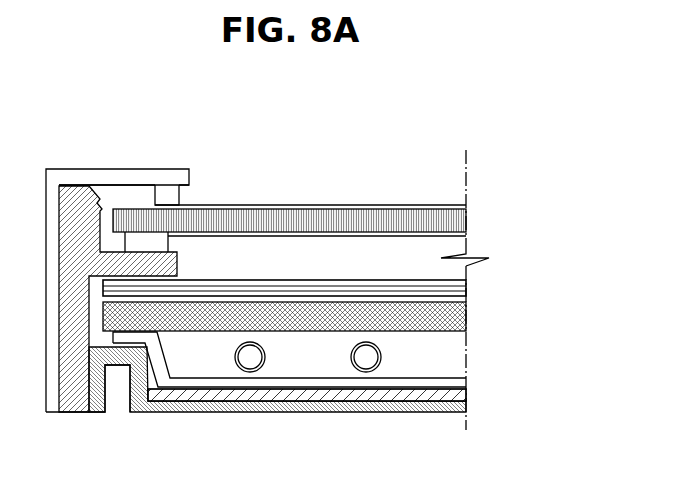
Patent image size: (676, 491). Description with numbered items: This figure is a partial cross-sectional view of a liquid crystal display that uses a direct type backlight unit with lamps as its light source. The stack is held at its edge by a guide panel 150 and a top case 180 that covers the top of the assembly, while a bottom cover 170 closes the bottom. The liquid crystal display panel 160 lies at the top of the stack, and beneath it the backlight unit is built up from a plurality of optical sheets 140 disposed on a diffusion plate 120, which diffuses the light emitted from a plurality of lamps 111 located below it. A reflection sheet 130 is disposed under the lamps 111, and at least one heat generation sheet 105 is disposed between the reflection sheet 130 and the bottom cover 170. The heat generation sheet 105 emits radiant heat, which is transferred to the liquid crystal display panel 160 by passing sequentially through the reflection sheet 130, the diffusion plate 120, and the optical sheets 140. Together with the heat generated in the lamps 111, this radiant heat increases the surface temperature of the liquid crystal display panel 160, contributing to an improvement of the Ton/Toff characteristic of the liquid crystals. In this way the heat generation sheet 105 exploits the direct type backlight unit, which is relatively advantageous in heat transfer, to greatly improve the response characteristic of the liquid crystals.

The heat generation sheet 105 is at (460, 397).
The lamps 111 is at (248, 362).
The diffusion plate 120 is at (462, 318).
The reflection sheet 130 is at (460, 385).
The optical sheets 140 is at (463, 285).
The guide panel 150 is at (70, 196).
The liquid crystal display panel 160 is at (460, 220).
The bottom cover 170 is at (460, 407).
The top case 180 is at (147, 173).